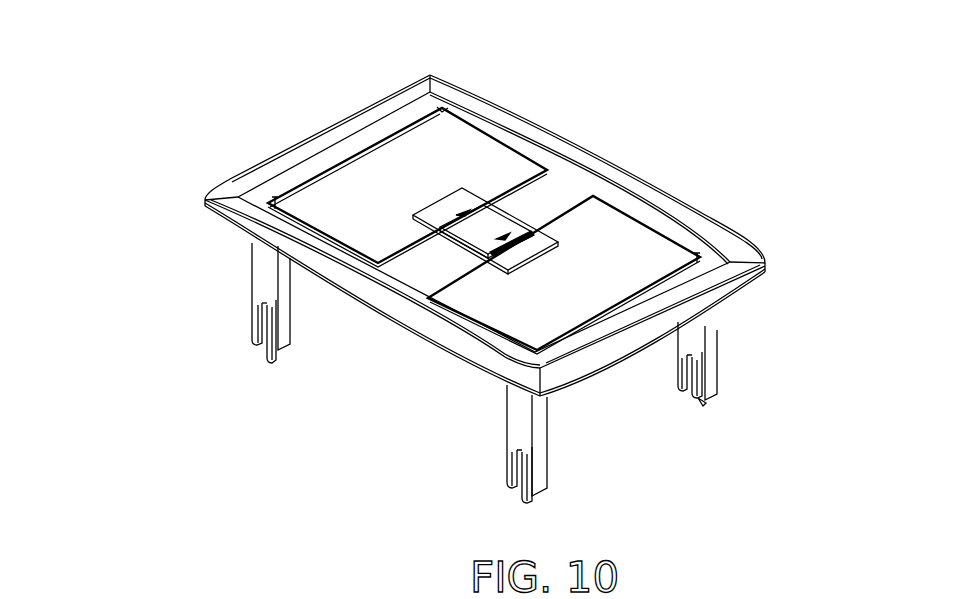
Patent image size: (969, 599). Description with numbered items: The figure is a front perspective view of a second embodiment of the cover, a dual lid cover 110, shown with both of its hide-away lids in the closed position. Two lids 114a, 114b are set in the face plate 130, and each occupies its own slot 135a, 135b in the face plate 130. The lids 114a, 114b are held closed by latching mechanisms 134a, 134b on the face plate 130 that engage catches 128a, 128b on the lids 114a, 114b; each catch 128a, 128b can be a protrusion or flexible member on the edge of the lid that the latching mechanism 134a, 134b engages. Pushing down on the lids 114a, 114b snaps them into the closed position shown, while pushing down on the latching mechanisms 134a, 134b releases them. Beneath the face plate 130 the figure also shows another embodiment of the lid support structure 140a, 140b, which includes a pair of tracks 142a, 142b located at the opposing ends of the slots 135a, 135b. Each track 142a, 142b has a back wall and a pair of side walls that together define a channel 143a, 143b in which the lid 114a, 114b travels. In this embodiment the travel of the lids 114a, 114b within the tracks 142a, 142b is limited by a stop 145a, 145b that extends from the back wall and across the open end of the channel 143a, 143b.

The dual lid cover 110 is at (705, 55).
The face plate 130 is at (710, 267).
The lid 114a is at (410, 194).
The lid 114b is at (606, 282).
The catch 128a is at (462, 205).
The catch 128b is at (540, 245).
The latching mechanism 134a is at (482, 223).
The latching mechanism 134b is at (500, 228).
The slot 135a is at (275, 203).
The slot 135b is at (697, 258).
The lid support structure 140a is at (206, 291).
The lid support structure 140b is at (634, 432).
The track 142a is at (263, 275).
The track 142b is at (526, 428).
The channel 143a is at (290, 298).
The channel 143b is at (624, 411).
The stop 145a is at (268, 362).
The stop 145b is at (530, 502).